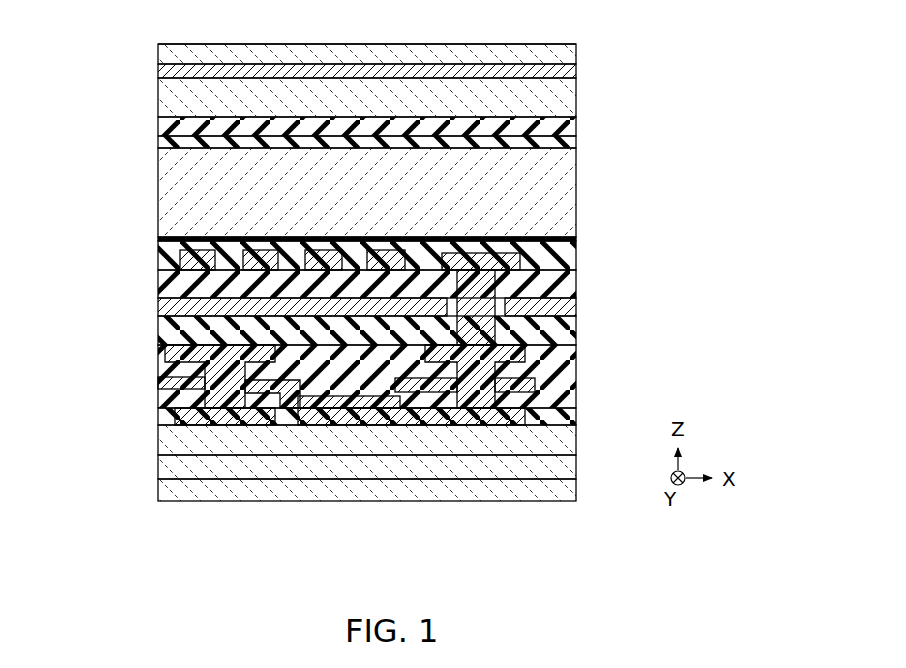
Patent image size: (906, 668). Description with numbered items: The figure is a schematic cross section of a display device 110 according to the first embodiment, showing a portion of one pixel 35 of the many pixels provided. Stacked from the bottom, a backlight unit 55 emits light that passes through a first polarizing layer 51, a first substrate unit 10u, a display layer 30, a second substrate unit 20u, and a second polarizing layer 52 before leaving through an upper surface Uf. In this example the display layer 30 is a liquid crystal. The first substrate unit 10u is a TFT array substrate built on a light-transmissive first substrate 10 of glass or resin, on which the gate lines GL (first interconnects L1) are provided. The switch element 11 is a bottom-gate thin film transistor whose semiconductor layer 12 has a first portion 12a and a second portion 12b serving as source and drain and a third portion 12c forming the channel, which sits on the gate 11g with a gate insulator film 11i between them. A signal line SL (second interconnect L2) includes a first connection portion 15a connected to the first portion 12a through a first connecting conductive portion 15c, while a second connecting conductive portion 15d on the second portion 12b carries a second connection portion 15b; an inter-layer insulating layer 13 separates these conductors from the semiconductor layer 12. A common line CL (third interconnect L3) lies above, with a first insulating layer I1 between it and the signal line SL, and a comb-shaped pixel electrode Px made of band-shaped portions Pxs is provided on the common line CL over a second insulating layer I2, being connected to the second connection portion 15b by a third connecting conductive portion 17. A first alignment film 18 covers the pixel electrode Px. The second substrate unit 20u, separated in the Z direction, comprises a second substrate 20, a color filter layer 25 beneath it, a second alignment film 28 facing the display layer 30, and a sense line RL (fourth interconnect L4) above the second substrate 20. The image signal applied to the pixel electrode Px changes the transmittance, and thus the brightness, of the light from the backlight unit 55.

The display device 110 is at (702, 82).
The upper surface Uf is at (196, 44).
The second polarizing layer 52 is at (565, 54).
The sense line RL is at (412, 75).
The fourth interconnect L4 is at (570, 71).
The second substrate 20 is at (570, 98).
The color filter layer 25 is at (570, 127).
The second alignment film 28 is at (570, 143).
The second substrate unit 20u is at (676, 58).
The display layer 30 is at (560, 190).
The pixel 35 is at (652, 216).
The first alignment film 18 is at (570, 240).
The pixel electrode Px is at (522, 262).
The portions having band configurations Pxs is at (260, 250).
The second insulating layer I2 is at (570, 285).
The third connecting conductive portion 17 is at (570, 307).
The common line CL is at (339, 320).
The third interconnect L3 is at (570, 330).
The first insulating layer I1 is at (545, 355).
The first substrate unit 10u is at (640, 442).
The signal line SL is at (128, 357).
The second interconnect L2 is at (172, 382).
The first connection portion 15a is at (190, 352).
The second connection portion 15b is at (520, 360).
The first connecting conductive portion 15c is at (178, 390).
The second connecting conductive portion 15d is at (522, 384).
The inter-layer insulating layer 13 is at (545, 415).
The semiconductor layer 12 is at (200, 415).
The first portion 12a is at (220, 418).
The second portion 12b is at (470, 418).
The third portion 12c is at (330, 418).
The switch element 11 is at (512, 543).
The gate 11g is at (357, 405).
The gate insulator film 11i is at (372, 405).
The gate line GL is at (411, 496).
The first interconnect L1 is at (360, 410).
The first substrate 10 is at (570, 440).
The first polarizing layer 51 is at (570, 468).
The backlight unit 55 is at (570, 492).